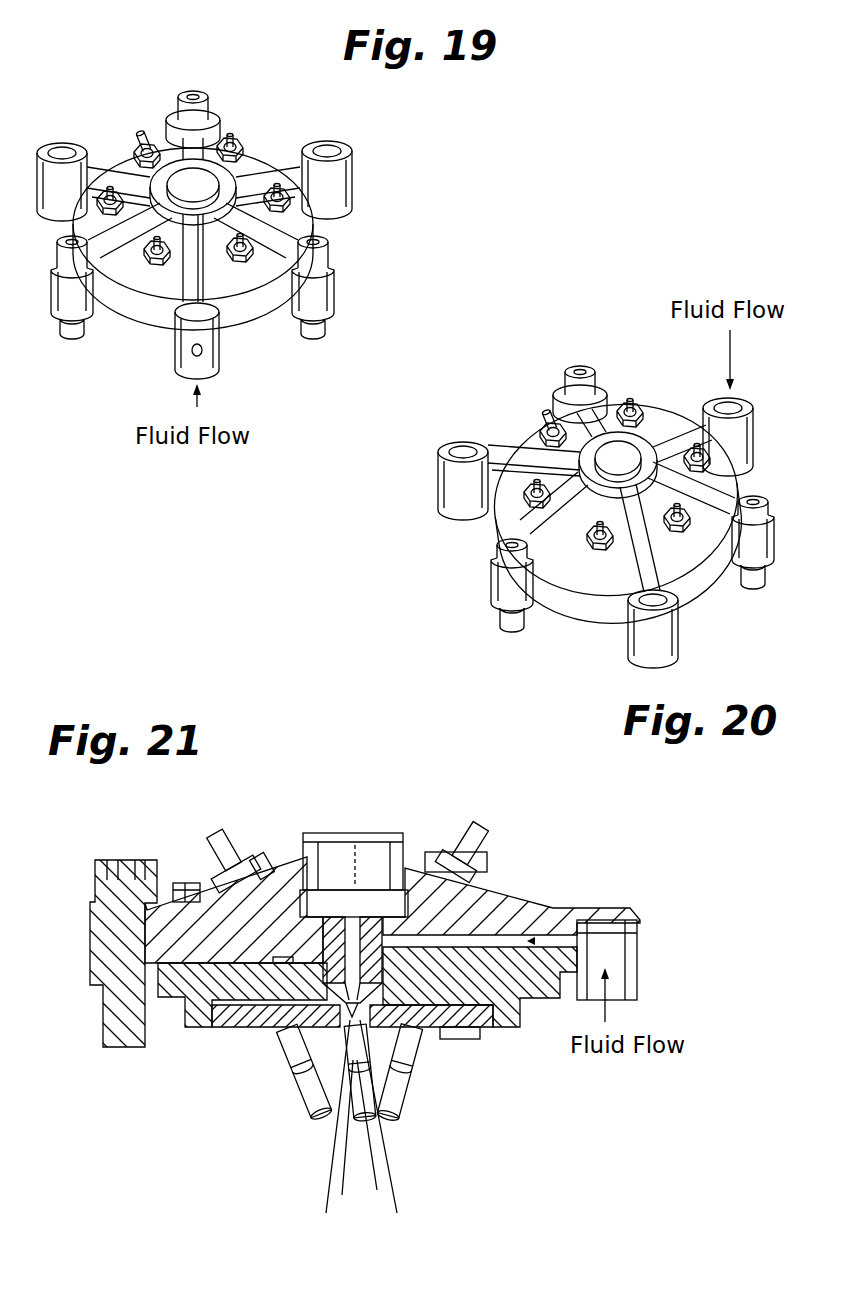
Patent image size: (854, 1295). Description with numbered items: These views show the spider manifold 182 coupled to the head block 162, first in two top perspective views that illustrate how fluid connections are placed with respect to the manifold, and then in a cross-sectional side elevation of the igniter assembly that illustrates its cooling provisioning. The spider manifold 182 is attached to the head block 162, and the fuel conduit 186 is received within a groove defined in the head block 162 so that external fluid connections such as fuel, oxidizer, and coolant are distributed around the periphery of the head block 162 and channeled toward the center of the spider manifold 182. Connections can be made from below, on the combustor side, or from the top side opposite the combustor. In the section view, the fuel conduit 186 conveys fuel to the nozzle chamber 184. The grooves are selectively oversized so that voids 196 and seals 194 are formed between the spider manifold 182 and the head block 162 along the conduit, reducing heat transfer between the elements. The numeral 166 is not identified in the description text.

In FIG. 19, the head block 162 is at (122, 322).
In FIG. 20, the head block 162 is at (557, 614).
In FIG. 21, the head block 162 is at (180, 1028).
In FIG. 19, the fastener 166 is at (142, 130).
In FIG. 19, the spider manifold 182 is at (258, 175).
In FIG. 20, the spider manifold 182 is at (510, 455).
In FIG. 21, the spider manifold 182 is at (517, 888).
In FIG. 21, the nozzle chamber 184 is at (293, 1057).
In FIG. 21, the fuel conduit 186 is at (533, 927).
In FIG. 21, the seals 194 is at (420, 1030).
In FIG. 21, the voids 196 is at (463, 1040).